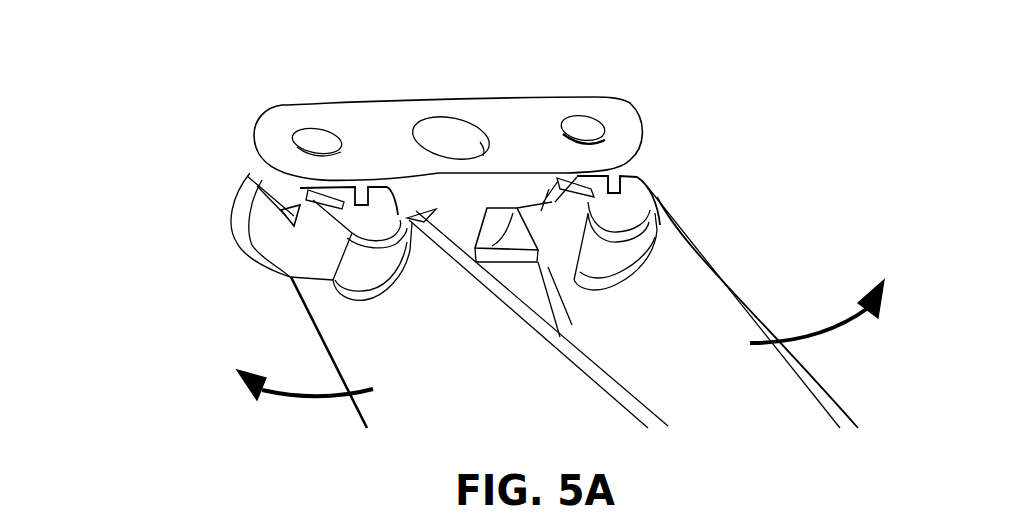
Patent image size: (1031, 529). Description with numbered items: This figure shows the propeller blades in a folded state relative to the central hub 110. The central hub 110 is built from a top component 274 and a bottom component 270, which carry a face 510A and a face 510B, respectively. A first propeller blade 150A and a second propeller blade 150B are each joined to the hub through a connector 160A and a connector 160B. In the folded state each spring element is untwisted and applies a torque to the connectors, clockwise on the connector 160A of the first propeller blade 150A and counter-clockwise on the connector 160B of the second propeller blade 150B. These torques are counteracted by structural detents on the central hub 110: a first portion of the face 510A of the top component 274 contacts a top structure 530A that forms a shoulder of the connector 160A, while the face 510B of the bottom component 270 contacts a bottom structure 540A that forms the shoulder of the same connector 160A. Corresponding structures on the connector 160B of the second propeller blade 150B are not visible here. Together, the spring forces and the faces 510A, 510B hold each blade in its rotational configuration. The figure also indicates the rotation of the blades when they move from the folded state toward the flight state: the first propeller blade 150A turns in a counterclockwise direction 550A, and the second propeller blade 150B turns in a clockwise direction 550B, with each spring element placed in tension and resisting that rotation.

The central hub 110 is at (487, 110).
The top component 274 is at (380, 110).
The face 510A is at (465, 190).
The face 510B is at (490, 253).
The top structure 530A is at (598, 205).
The bottom structure 540A is at (540, 328).
The connector 160A is at (622, 223).
The connector 160B is at (312, 233).
The bottom component 270 is at (247, 246).
The first propeller blade 150A is at (712, 359).
The second propeller blade 150B is at (448, 376).
The counterclockwise direction 550A is at (895, 318).
The clockwise direction 550B is at (270, 403).